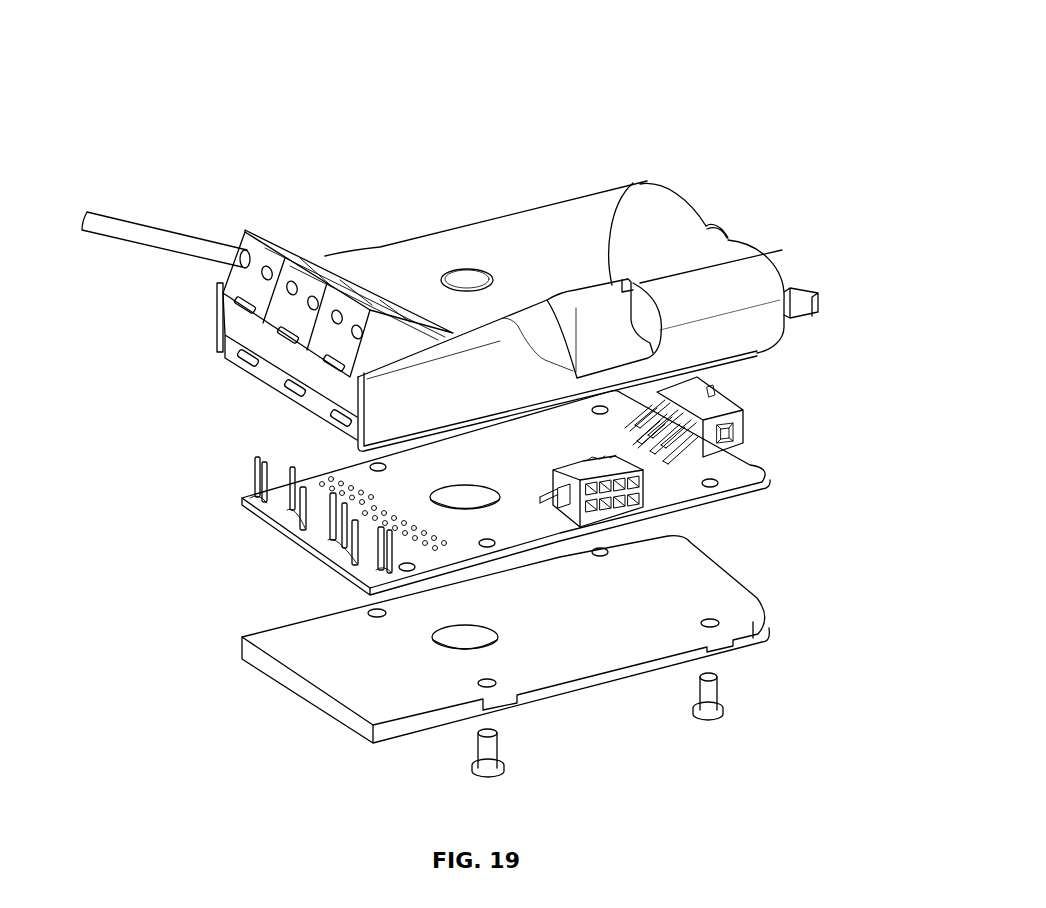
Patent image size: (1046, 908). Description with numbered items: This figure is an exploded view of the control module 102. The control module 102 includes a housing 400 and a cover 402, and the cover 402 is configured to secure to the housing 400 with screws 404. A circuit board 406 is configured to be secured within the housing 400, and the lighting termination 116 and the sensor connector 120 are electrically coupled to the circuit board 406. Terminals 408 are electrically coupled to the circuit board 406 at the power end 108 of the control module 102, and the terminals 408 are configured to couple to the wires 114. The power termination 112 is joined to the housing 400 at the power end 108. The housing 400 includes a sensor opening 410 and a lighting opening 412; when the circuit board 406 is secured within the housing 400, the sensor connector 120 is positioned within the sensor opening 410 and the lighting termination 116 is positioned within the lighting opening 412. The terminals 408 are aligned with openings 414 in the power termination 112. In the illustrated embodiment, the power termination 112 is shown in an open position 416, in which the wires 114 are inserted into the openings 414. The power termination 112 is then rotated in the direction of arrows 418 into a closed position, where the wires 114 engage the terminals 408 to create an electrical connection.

The control module 102 is at (774, 46).
The power end 108 is at (147, 478).
The power termination 112 is at (287, 240).
The wires 114 is at (110, 222).
The lighting termination 116 is at (737, 430).
The sensor connector 120 is at (653, 503).
The housing 400 is at (513, 230).
The cover 402 is at (327, 705).
The screws 404 is at (493, 753).
The circuit board 406 is at (750, 470).
The terminals 408 is at (250, 473).
The sensor opening 410 is at (602, 324).
The lighting opening 412 is at (724, 226).
The openings 414 is at (245, 228).
The open position 416 is at (411, 167).
The arrows 418 is at (132, 357).